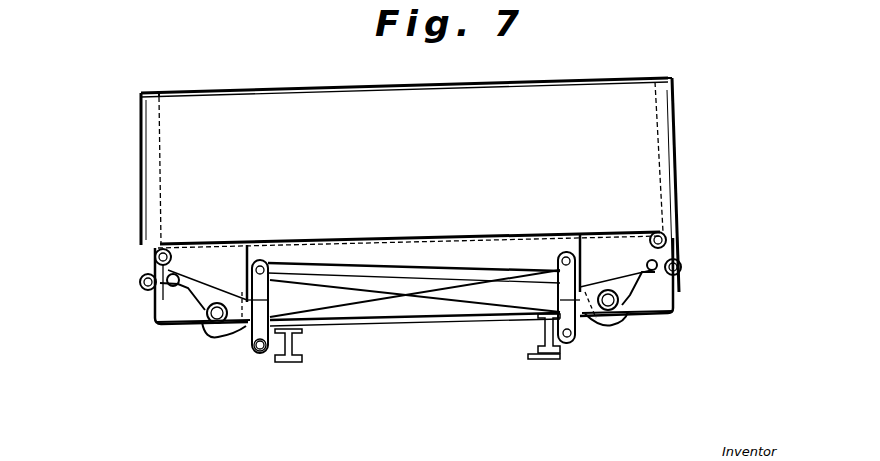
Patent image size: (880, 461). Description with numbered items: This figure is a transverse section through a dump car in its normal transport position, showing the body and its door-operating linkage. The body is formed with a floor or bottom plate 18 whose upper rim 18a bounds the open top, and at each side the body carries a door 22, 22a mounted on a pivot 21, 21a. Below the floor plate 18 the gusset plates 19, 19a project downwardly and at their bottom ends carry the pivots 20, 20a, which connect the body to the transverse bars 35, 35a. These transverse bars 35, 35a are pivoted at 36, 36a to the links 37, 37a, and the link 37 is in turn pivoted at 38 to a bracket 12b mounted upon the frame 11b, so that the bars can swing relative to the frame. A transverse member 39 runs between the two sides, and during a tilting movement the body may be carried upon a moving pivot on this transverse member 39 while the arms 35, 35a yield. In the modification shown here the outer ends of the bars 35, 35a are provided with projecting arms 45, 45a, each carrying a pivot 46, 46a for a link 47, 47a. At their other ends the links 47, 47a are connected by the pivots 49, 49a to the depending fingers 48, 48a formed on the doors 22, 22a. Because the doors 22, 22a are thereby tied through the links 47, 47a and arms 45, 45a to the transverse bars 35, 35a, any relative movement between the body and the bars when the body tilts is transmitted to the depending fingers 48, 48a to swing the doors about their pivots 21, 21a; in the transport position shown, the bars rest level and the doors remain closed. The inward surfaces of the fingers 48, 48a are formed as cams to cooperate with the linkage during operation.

The floor or bottom plate 18 is at (362, 240).
The top rim of car body 18a is at (273, 78).
The door 22 is at (142, 150).
The door 22a is at (678, 112).
The gusset plate 19 is at (180, 305).
The gusset plate 19a is at (617, 232).
The pivot 20 is at (195, 328).
The pivot 20a is at (612, 312).
The pivot 21 is at (170, 252).
The pivot 21a is at (672, 240).
The projecting arm 45 is at (200, 287).
The projecting arm 45a is at (615, 268).
The pivot 46 is at (157, 307).
The pivot 46a is at (675, 290).
The link 47 is at (148, 297).
The link 47a is at (686, 273).
The depending finger 48 is at (150, 262).
The depending finger 48a is at (672, 252).
The pivot 49 is at (148, 281).
The pivot 49a is at (682, 265).
The pivot 36 is at (268, 262).
The pivot 36a is at (566, 252).
The transverse bar 35 is at (493, 263).
The transverse bar 35a is at (417, 267).
The transverse member 39 is at (416, 308).
The link 37 is at (240, 326).
The link 37a is at (523, 320).
The pivot 38 is at (268, 353).
The frame 11b is at (285, 345).
The bracket 12b is at (543, 345).